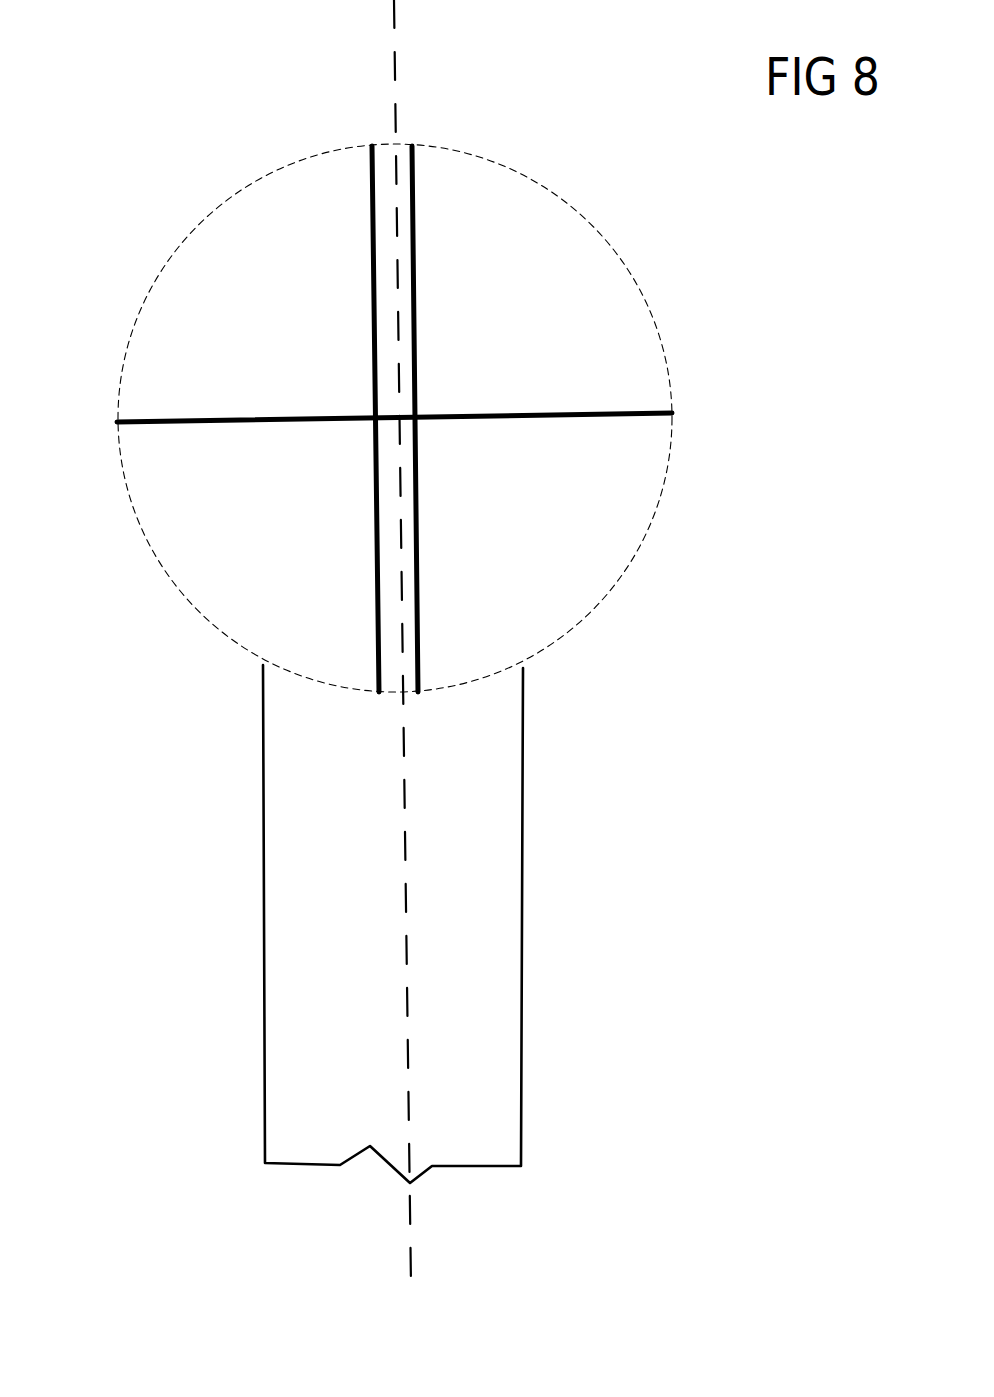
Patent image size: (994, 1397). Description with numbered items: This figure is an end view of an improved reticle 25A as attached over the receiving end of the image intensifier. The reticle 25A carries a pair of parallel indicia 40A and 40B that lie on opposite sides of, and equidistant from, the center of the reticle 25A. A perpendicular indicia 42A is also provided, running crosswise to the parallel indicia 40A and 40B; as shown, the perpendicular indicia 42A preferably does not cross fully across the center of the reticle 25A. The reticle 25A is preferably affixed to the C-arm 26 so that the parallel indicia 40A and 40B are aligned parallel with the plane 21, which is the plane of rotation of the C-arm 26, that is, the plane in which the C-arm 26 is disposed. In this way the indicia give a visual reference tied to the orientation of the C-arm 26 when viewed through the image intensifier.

The plane 21 is at (393, 15).
The reticle 25A is at (642, 212).
The parallel indicia 40A is at (370, 262).
The parallel indicia 40B is at (413, 231).
The perpendicular indicia 42A is at (230, 424).
The C-arm 26 is at (288, 910).